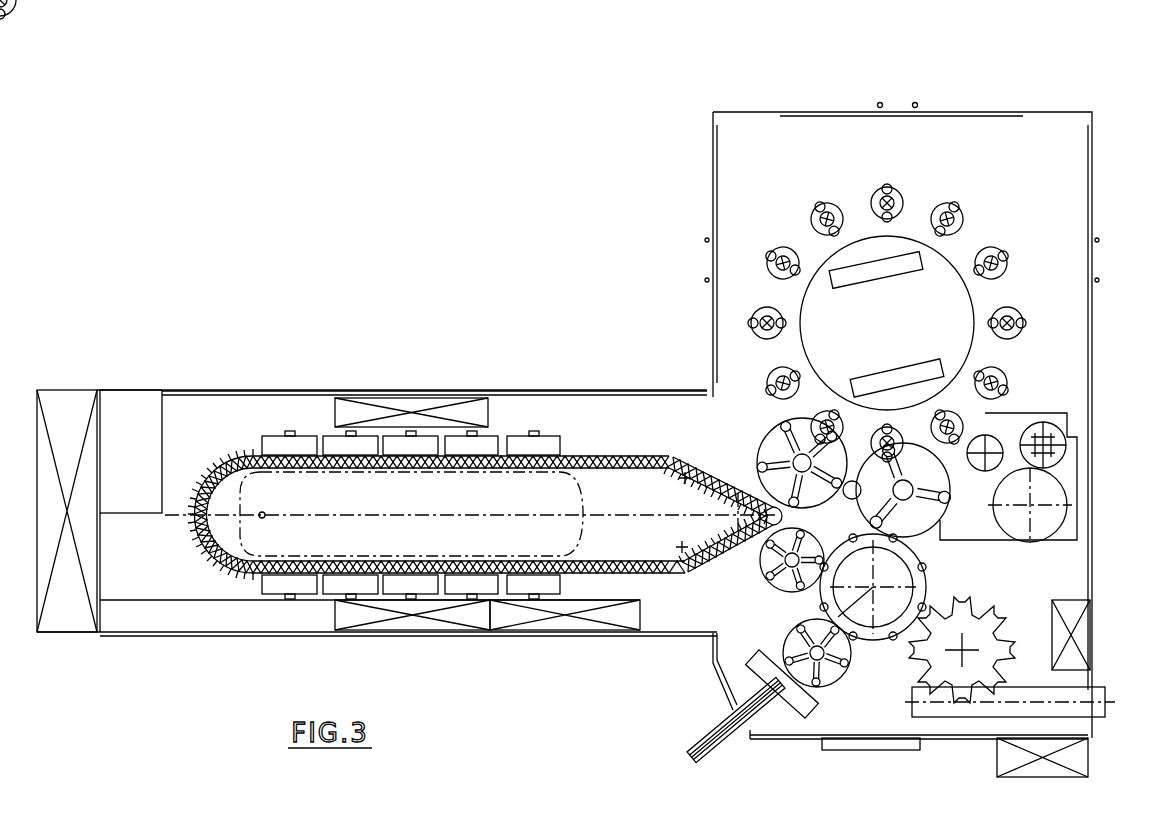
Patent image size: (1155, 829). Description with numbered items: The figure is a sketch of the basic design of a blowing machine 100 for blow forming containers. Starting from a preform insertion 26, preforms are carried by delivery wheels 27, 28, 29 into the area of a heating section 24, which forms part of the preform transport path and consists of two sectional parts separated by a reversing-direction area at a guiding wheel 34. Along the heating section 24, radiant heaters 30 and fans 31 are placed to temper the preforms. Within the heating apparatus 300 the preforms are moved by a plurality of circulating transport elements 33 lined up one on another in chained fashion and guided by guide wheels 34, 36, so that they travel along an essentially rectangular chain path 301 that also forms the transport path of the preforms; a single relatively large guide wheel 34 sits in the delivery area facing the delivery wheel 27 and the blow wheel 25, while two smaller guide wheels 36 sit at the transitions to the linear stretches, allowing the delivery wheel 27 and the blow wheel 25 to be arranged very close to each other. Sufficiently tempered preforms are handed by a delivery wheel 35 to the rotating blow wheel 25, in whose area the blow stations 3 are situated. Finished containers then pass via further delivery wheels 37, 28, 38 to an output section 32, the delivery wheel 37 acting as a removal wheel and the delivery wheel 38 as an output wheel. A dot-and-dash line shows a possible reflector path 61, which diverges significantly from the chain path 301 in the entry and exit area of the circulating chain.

The blowing machine 100 is at (440, 100).
The heating apparatus 300 is at (320, 268).
The chain path 301 is at (222, 457).
The blow stations 3 is at (765, 305).
The heating section 24 is at (525, 418).
The blow wheel 25 is at (830, 257).
The preform insertion 26 is at (743, 740).
The delivery wheel 27 is at (828, 693).
The delivery wheel 28 is at (873, 640).
The delivery wheel 29 is at (772, 582).
The radiant heaters 30 is at (305, 440).
The fans 31 is at (407, 403).
The output section 32 is at (1095, 708).
The circulating transport elements 33 is at (233, 567).
The guide wheel 34 is at (265, 520).
The delivery wheel 35 is at (780, 423).
The guide wheels 36 is at (685, 478).
The delivery wheel 37 is at (940, 507).
The delivery wheel 38 is at (970, 660).
The reflector path 61 is at (582, 482).